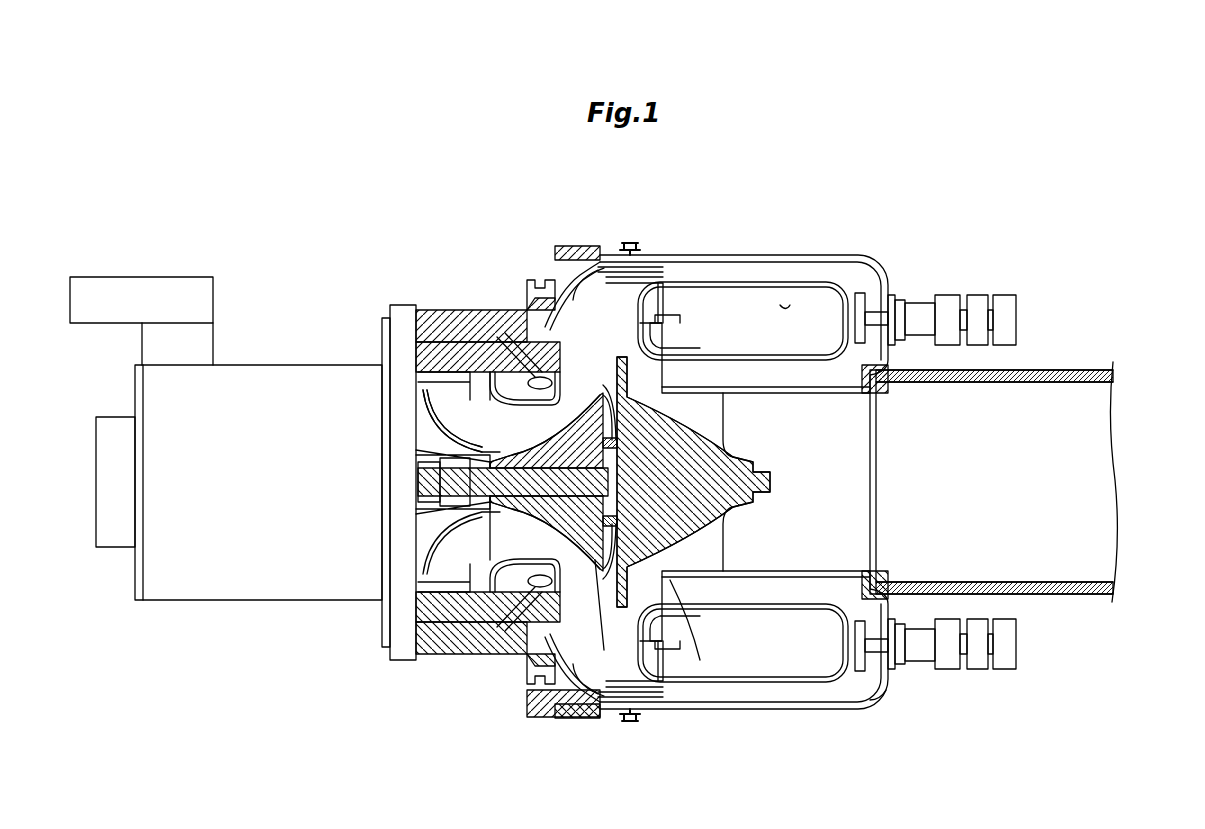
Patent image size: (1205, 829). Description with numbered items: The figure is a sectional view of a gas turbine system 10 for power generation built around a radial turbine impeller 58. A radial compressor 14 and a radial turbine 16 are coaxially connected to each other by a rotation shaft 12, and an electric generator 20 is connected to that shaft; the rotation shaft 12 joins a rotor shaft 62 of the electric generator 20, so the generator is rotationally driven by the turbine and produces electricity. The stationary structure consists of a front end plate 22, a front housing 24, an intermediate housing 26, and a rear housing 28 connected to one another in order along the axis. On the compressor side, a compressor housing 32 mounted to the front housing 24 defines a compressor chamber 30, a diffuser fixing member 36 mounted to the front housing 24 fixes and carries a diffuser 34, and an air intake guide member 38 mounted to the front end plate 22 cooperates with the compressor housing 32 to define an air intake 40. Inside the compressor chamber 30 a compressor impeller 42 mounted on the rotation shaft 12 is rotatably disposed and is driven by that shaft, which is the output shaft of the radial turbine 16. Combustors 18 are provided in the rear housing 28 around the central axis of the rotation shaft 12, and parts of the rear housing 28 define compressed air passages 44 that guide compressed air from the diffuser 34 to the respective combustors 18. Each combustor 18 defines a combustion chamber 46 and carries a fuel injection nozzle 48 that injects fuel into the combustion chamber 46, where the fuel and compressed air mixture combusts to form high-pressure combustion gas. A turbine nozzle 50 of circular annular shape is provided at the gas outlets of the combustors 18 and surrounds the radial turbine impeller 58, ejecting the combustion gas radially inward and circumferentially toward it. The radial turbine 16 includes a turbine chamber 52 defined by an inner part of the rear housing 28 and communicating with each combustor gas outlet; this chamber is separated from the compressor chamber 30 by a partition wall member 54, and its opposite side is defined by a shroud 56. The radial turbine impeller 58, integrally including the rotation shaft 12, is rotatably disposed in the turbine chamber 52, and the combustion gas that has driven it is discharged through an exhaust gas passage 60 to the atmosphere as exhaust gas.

The gas turbine system 10 is at (511, 298).
The rotation shaft 12 is at (508, 650).
The radial compressor 14 is at (478, 640).
The radial turbine 16 is at (742, 522).
The combustors 18 is at (692, 288).
The electric generator 20 is at (185, 600).
The front end plate 22 is at (400, 662).
The front housing 24 is at (513, 658).
The intermediate housing 26 is at (572, 717).
The rear housing 28 is at (880, 698).
The compressor chamber 30 is at (503, 549).
The compressor housing 32 is at (490, 378).
The diffuser 34 is at (590, 295).
The diffuser fixing member 36 is at (556, 330).
The air intake guide member 38 is at (448, 428).
The air intake 40 is at (470, 435).
The compressor impeller 42 is at (460, 432).
The compressed air passages 44 is at (836, 268).
The combustion chamber 46 is at (788, 300).
The fuel injection nozzle 48 is at (918, 332).
The turbine nozzle 50 is at (653, 350).
The turbine chamber 52 is at (712, 432).
The partition wall member 54 is at (598, 562).
The shroud 56 is at (678, 585).
The radial turbine impeller 58 is at (725, 457).
The exhaust gas passage 60 is at (1085, 408).
The rotor shaft 62 is at (420, 479).